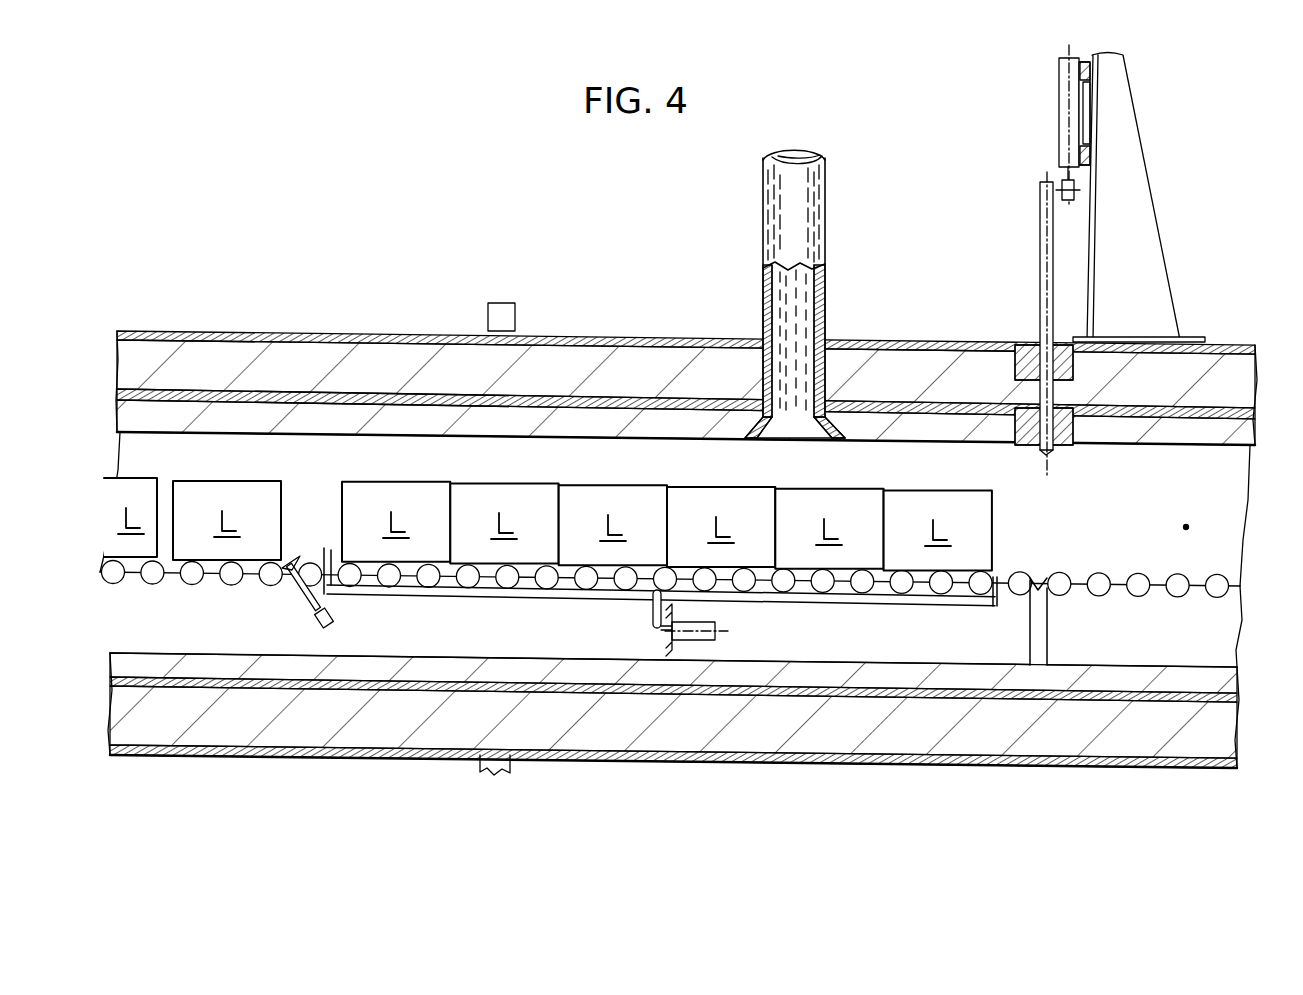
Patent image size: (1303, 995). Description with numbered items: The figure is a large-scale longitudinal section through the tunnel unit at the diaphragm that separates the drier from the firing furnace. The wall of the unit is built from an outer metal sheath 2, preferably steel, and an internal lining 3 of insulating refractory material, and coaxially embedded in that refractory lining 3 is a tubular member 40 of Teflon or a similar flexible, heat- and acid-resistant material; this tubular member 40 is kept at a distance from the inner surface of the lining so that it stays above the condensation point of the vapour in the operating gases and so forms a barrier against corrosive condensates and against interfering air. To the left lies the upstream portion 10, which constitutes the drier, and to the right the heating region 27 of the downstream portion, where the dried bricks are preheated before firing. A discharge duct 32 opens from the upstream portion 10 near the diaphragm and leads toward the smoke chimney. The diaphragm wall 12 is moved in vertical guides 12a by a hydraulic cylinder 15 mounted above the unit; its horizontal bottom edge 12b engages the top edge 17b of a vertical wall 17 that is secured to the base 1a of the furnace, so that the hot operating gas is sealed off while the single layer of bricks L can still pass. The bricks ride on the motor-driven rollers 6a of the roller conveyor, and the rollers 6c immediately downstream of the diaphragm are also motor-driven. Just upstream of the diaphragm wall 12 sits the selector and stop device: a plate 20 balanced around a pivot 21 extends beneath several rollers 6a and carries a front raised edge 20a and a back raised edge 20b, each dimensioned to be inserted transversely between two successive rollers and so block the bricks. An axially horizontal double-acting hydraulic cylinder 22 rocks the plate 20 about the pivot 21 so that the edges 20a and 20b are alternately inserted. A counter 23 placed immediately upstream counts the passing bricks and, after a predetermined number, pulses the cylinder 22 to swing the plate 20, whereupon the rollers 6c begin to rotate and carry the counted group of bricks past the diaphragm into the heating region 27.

The base 1a is at (818, 663).
The outer metal sheath 2 is at (601, 340).
The internal lining of insulating refractory material 3 is at (668, 365).
The tubular member 40 is at (545, 395).
The upstream portion 10 is at (310, 455).
The discharge duct 32 is at (825, 282).
The hydraulic cylinder 15 is at (1068, 128).
The wall 12 is at (1042, 298).
The vertical guides 12a is at (1023, 365).
The horizontal bottom edge 12b is at (1053, 470).
The motor-driven rollers 6a is at (148, 578).
The rollers 6c is at (1062, 586).
The plate 20 is at (597, 597).
The front raised edge 20a is at (327, 547).
The back raised edge 20b is at (993, 580).
The pivot 21 is at (657, 602).
The double-acting hydraulic cylinder 22 is at (700, 627).
The counter 23 is at (302, 602).
The vertical wall 17 is at (1028, 635).
The top edge 17b is at (1035, 580).
The heating region 27 is at (1189, 514).